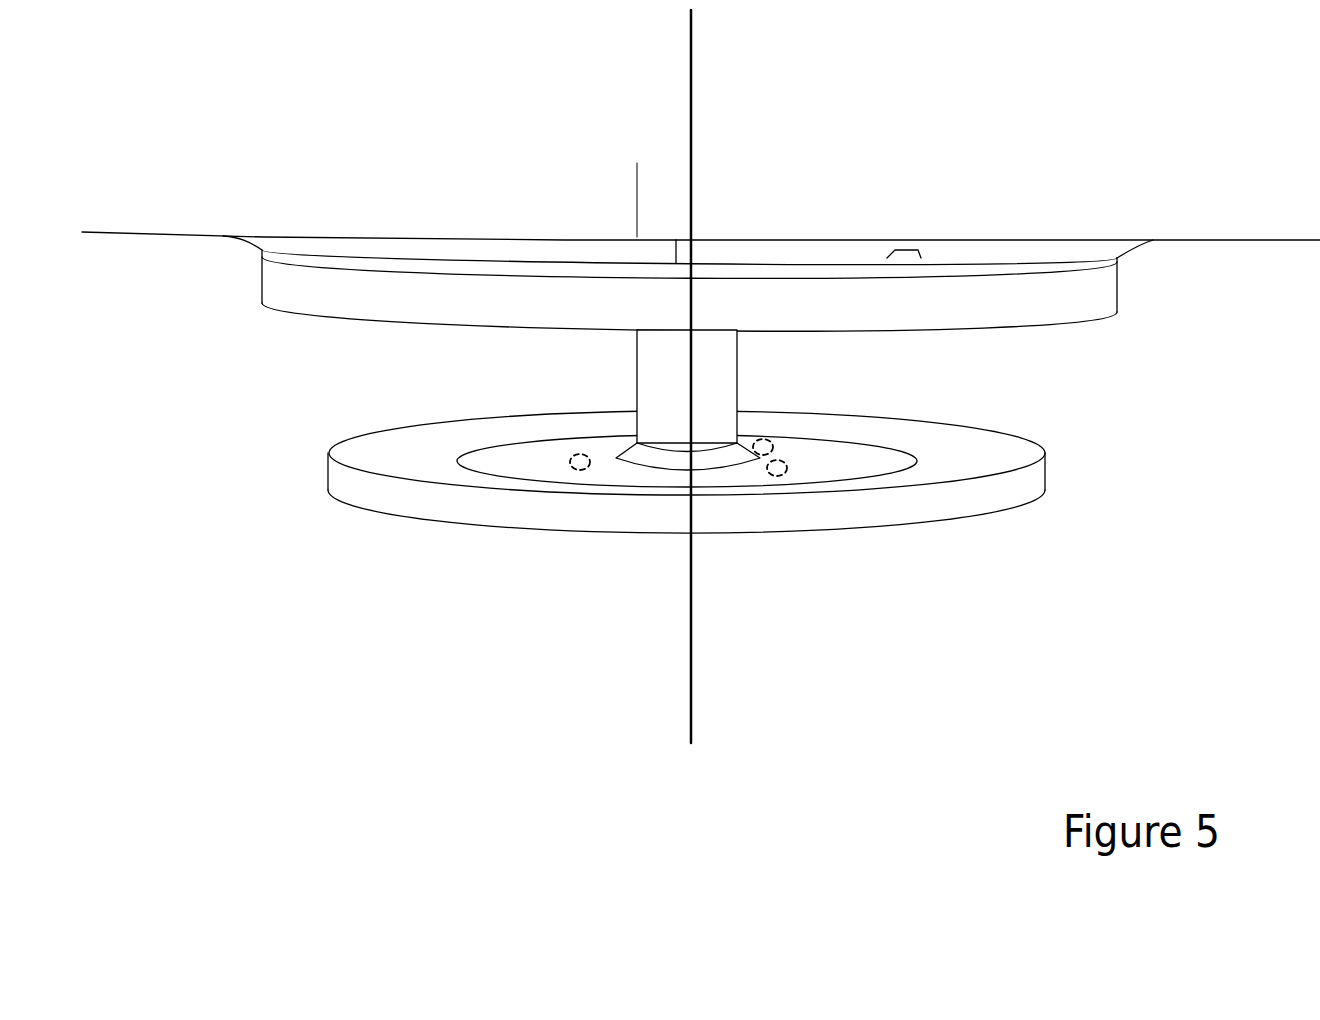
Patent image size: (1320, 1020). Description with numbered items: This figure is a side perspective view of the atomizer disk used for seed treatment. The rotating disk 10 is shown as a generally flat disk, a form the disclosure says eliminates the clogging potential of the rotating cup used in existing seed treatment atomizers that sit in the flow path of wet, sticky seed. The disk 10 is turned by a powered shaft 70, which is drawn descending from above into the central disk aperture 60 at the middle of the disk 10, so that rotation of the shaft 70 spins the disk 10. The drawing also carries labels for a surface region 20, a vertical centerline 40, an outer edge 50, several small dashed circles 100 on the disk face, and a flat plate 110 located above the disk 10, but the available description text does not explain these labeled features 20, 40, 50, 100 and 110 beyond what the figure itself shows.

The rotating disk 10 is at (668, 443).
The top surface of base plate 20 is at (961, 430).
The axis 40 is at (711, 711).
The outer edge of base plate 50 is at (1040, 429).
The central disk aperture 60 is at (622, 423).
The powered shaft 70 is at (755, 361).
The holes 100 is at (564, 435).
The upper plate 110 is at (341, 332).